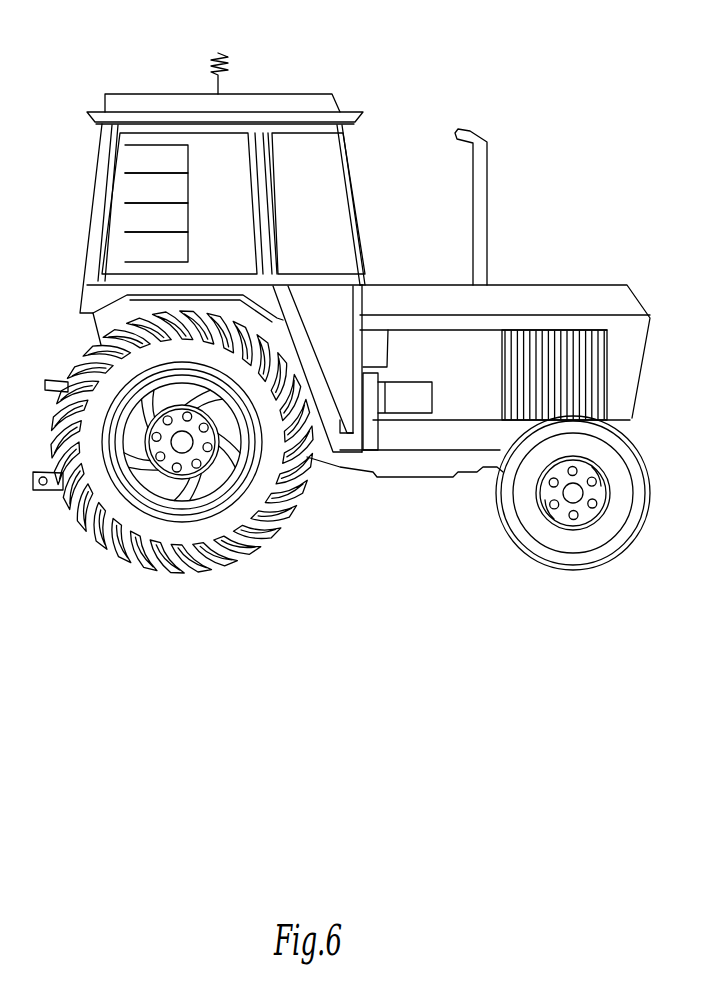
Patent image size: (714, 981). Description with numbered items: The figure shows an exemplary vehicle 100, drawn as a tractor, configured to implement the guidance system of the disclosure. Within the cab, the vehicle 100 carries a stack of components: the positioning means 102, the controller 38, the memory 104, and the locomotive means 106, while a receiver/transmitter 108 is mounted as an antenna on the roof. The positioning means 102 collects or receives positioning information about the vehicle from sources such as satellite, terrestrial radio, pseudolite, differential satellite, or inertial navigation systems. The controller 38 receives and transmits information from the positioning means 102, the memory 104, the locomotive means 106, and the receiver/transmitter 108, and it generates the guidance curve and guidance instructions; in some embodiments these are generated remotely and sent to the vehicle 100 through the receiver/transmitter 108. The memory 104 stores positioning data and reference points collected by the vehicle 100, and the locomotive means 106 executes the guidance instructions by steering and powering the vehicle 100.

The vehicle 100 is at (341, 295).
The positioning means 102 is at (137, 162).
The controller 38 is at (137, 192).
The memory 104 is at (137, 220).
The locomotive means 106 is at (137, 250).
The receiver/transmitter 108 is at (228, 48).